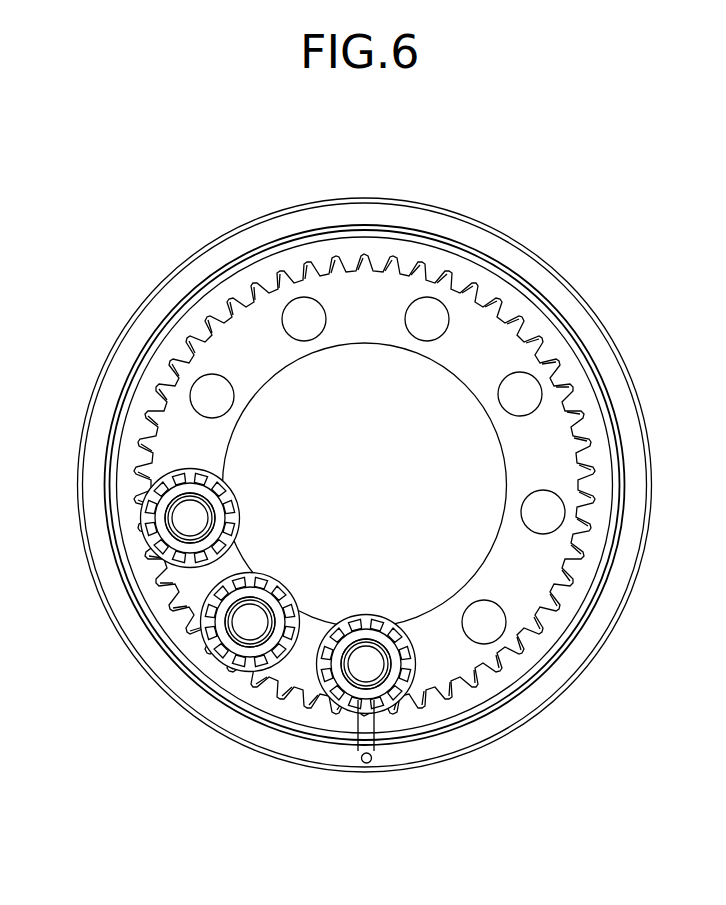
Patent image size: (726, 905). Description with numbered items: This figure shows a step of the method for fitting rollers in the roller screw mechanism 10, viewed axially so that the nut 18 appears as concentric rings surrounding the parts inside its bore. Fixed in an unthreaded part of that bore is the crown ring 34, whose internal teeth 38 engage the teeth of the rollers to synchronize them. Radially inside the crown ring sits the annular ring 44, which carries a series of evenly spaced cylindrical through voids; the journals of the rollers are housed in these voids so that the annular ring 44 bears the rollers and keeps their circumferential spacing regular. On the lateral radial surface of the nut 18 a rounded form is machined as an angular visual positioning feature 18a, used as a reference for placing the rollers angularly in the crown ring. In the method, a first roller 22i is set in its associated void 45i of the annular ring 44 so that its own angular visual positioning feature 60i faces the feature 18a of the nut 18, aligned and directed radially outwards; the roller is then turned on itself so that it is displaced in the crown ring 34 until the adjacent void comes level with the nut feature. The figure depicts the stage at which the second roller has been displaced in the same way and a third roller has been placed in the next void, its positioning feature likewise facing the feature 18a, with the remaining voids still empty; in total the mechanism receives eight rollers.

The roller screw mechanism 10 is at (533, 180).
The nut 18 is at (612, 370).
The angular visual positioning feature 18a is at (367, 763).
The crown ring 34 is at (607, 482).
The teeth 38 is at (557, 427).
The annular ring 44 is at (533, 577).
The void 45i is at (188, 512).
The first roller 22i is at (148, 490).
The angular visual positioning feature 60i is at (152, 563).